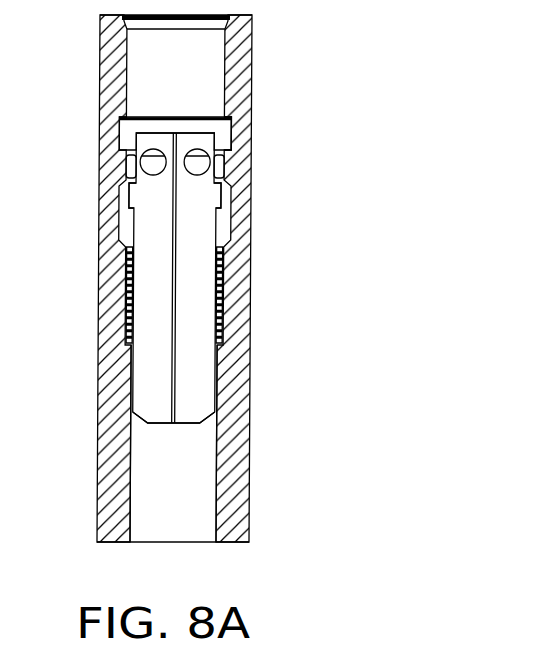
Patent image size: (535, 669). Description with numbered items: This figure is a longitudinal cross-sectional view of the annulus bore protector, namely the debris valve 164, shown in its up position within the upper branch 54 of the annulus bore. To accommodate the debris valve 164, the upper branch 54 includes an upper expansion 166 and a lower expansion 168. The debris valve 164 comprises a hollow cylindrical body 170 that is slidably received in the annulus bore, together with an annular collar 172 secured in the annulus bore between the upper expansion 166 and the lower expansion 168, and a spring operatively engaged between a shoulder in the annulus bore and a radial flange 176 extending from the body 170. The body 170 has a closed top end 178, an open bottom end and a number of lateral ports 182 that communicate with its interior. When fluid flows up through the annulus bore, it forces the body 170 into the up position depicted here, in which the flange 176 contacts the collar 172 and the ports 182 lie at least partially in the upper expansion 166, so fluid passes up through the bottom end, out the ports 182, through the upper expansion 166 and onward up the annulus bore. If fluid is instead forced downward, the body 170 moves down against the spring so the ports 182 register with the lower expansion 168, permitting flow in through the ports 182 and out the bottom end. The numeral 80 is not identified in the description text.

The debris valve 164 is at (303, 87).
The closed top end 178 is at (143, 119).
The upper expansion 166 is at (233, 134).
The hollow cylindrical body 170 is at (133, 216).
The annular collar 172 is at (128, 162).
The lateral ports 182 is at (218, 162).
The radial flange 176 is at (133, 185).
The lower expansion 168 is at (232, 215).
The body bottom 80 is at (160, 425).
The upper branch 54 is at (217, 484).